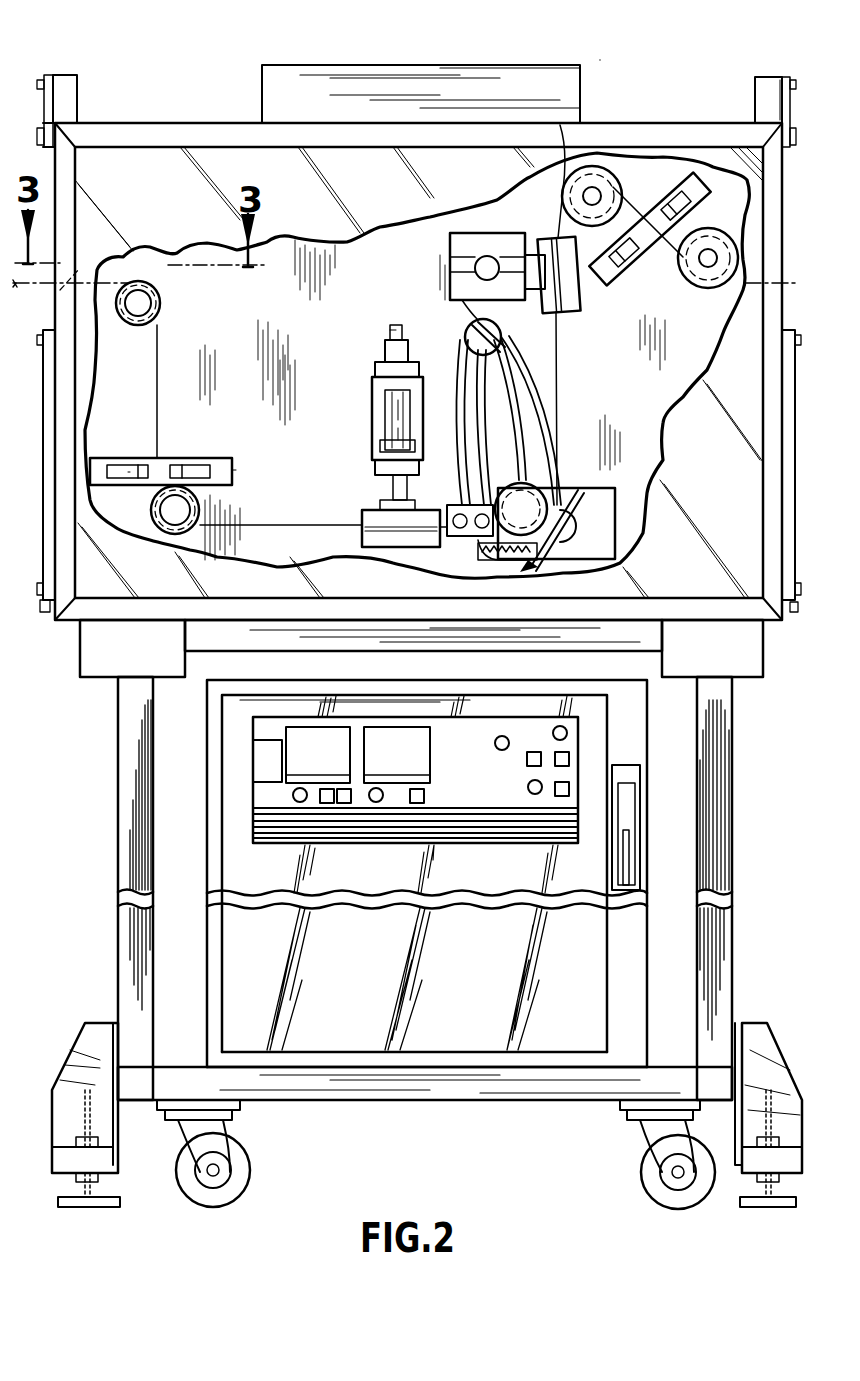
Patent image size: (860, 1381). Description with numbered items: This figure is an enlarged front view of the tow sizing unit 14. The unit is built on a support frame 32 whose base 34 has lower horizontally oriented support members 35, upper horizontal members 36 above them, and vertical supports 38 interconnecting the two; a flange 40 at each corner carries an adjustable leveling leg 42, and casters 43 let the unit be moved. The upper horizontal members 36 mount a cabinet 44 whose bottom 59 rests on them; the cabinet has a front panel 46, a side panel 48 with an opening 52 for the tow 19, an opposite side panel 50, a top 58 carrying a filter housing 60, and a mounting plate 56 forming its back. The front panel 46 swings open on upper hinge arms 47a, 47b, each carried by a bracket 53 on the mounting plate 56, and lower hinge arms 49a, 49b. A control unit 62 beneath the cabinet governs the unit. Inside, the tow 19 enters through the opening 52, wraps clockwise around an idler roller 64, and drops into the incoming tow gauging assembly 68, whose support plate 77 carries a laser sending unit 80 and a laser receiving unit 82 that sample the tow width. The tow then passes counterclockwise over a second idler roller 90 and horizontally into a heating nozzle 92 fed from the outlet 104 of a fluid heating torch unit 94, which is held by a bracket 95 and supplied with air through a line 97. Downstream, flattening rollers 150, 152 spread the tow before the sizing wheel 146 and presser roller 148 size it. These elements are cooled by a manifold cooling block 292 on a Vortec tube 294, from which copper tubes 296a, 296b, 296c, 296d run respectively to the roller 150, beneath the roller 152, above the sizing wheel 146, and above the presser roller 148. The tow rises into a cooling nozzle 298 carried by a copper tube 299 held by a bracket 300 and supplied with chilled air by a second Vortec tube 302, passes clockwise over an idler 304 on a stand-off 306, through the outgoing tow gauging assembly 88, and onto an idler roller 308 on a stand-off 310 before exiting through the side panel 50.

The tow sizing unit 14 is at (682, 22).
The tow 19 is at (158, 370).
The support frame 32 is at (112, 712).
The base 34 is at (425, 1085).
The lower horizontally oriented support members 35 is at (496, 1102).
The upper horizontal members 36 is at (418, 636).
The vertical supports 38 is at (118, 906).
The flange 40 is at (95, 1035).
The leveling leg 42 is at (96, 1188).
The casters 43 is at (232, 1200).
The cabinet 44 is at (210, 122).
The front panel 46 is at (380, 202).
The upper hinge arm 47a is at (48, 74).
The upper hinge arm 47b is at (785, 76).
The side panel 48 is at (50, 218).
The lower hinge arm 49a is at (50, 413).
The lower hinge arm 49b is at (790, 488).
The side panel 50 is at (782, 202).
The opening 52 is at (85, 259).
The bracket 53 is at (78, 92).
The mounting plate 56 is at (306, 332).
The top 58 is at (607, 123).
The bottom 59 is at (222, 626).
The housing 60 is at (398, 65).
The control unit 62 is at (472, 882).
The idler roller 64 is at (160, 296).
The incoming tow gauging assembly 68 is at (176, 450).
The support plate 77 is at (233, 470).
The laser sending unit 80 is at (195, 470).
The laser receiving unit 82 is at (122, 485).
The outgoing tow gauging assembly 88 is at (626, 298).
The second idler roller 90 is at (165, 530).
The heating nozzle 92 is at (362, 528).
The fluid heating torch unit 94 is at (375, 422).
The bracket 95 is at (378, 452).
The line 97 is at (390, 330).
The outlet 104 is at (396, 480).
The sizing wheel 146 is at (533, 483).
The presser roller 148 is at (565, 530).
The flattening roller 150 is at (463, 532).
The flattening roller 152 is at (487, 548).
The manifold cooling block 292 is at (498, 326).
The Vortec tube 294 is at (462, 297).
The copper tube 296a is at (466, 335).
The copper tube 296b is at (566, 423).
The copper tube 296c is at (512, 422).
The copper tube 296d is at (485, 402).
The cooling nozzle 298 is at (545, 222).
The copper tube 299 is at (532, 255).
The bracket 300 is at (462, 234).
The second Vortec tube 302 is at (470, 262).
The idler 304 is at (561, 125).
The stand-off 306 is at (594, 196).
The idler roller 308 is at (700, 288).
The stand-off 310 is at (710, 258).